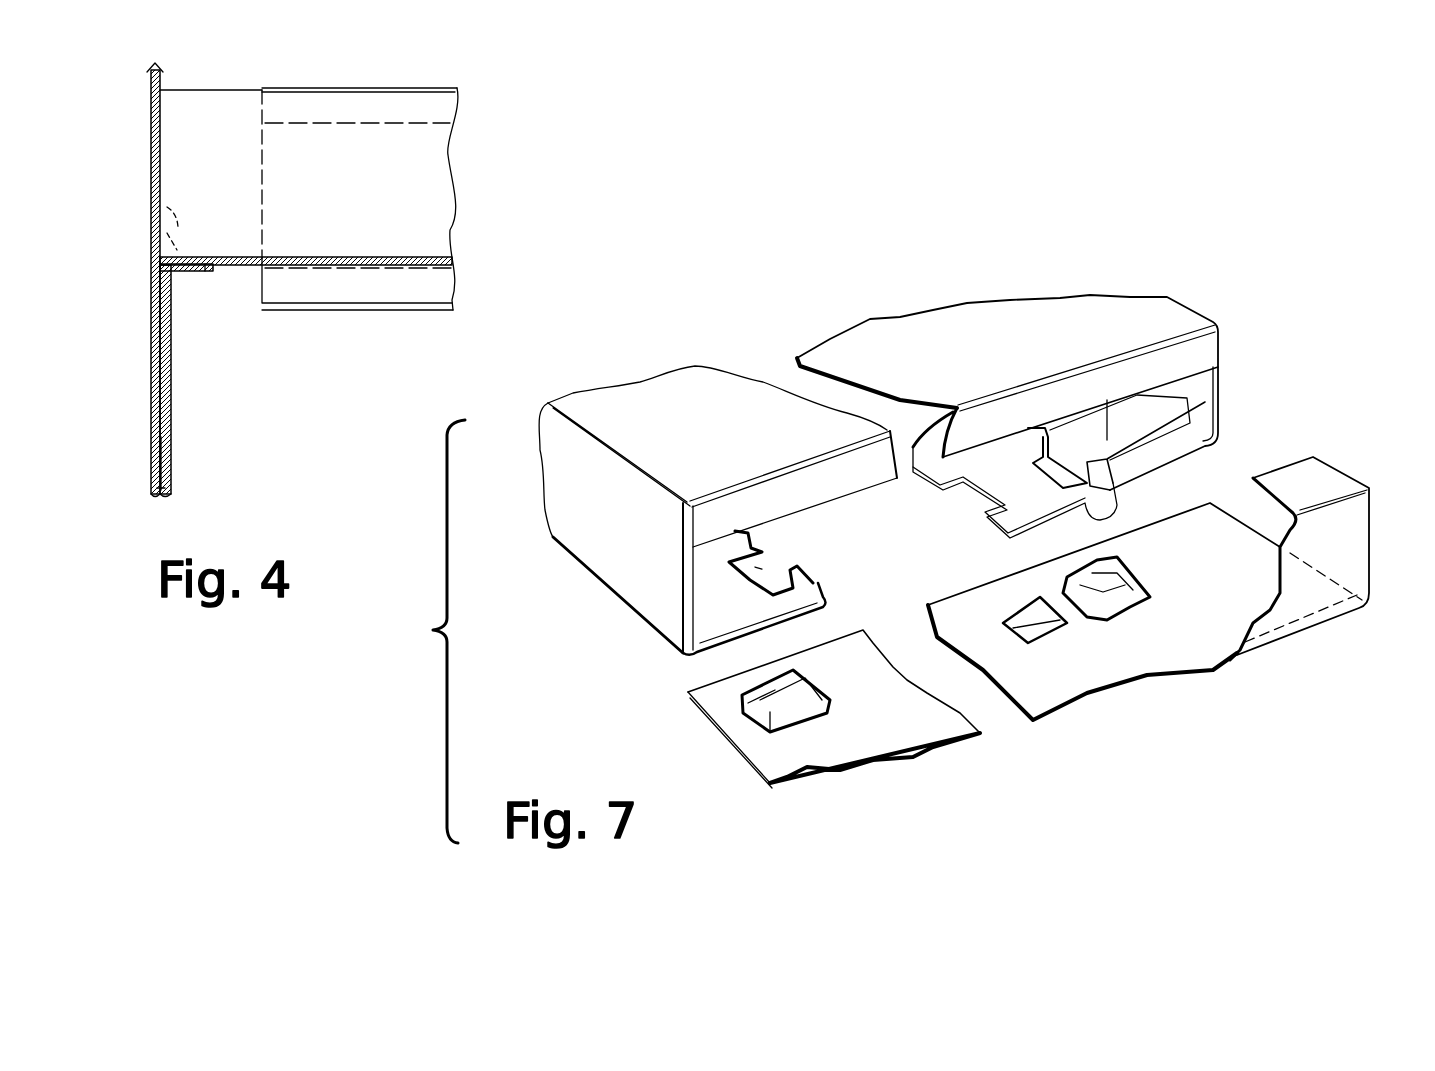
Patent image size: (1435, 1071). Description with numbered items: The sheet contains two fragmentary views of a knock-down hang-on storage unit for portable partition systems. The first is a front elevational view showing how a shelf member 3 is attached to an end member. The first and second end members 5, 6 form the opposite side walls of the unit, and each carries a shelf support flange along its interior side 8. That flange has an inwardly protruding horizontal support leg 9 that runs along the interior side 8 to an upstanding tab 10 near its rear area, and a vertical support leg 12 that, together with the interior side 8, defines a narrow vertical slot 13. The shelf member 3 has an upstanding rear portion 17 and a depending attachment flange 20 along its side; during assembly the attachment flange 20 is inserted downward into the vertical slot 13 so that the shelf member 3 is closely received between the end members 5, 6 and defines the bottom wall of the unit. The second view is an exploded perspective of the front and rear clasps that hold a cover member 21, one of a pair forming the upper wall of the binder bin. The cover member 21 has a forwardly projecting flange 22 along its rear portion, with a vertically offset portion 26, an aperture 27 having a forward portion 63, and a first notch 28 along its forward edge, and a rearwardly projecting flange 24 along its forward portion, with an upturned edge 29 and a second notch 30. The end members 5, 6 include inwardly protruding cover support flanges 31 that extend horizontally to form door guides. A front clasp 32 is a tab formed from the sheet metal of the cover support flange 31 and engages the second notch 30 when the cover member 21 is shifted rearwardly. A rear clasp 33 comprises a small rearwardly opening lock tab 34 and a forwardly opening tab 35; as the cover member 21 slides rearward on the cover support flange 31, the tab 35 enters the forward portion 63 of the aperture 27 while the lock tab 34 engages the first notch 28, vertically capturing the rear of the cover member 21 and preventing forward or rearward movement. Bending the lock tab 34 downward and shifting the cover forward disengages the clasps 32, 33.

In FIG. 4, the shelf member 3 is at (347, 257).
In FIG. 7, the first end member 5 is at (1343, 533).
In FIG. 4, the second end member 6 is at (152, 117).
In FIG. 4, the interior side 8 is at (160, 143).
In FIG. 4, the horizontal support leg 9 is at (197, 274).
In FIG. 4, the upstanding tab 10 is at (160, 200).
In FIG. 4, the vertical support leg 12 is at (172, 443).
In FIG. 4, the vertical slot 13 is at (158, 450).
In FIG. 4, the upstanding rear portion 17 is at (365, 110).
In FIG. 4, the second depending attachment flange 20 is at (163, 338).
In FIG. 7, the cover member 21 is at (1017, 353).
In FIG. 7, the forwardly projecting flange 22 is at (1130, 517).
In FIG. 7, the rearwardly projecting flange 24 is at (723, 610).
In FIG. 7, the vertically offset portion 26 is at (1190, 456).
In FIG. 7, the aperture 27 is at (1177, 395).
In FIG. 7, the first notch 28 is at (980, 497).
In FIG. 7, the upturned edge 29 is at (807, 585).
In FIG. 7, the second notch 30 is at (760, 567).
In FIG. 7, the cover support flange 31 is at (867, 715).
In FIG. 7, the front clasp 32 is at (755, 707).
In FIG. 7, the rear clasp 33 is at (1077, 647).
In FIG. 7, the lock tab 34 is at (1033, 623).
In FIG. 7, the forwardly opening tab 35 is at (1127, 587).
In FIG. 7, the forward portion of aperture 63 is at (1063, 477).